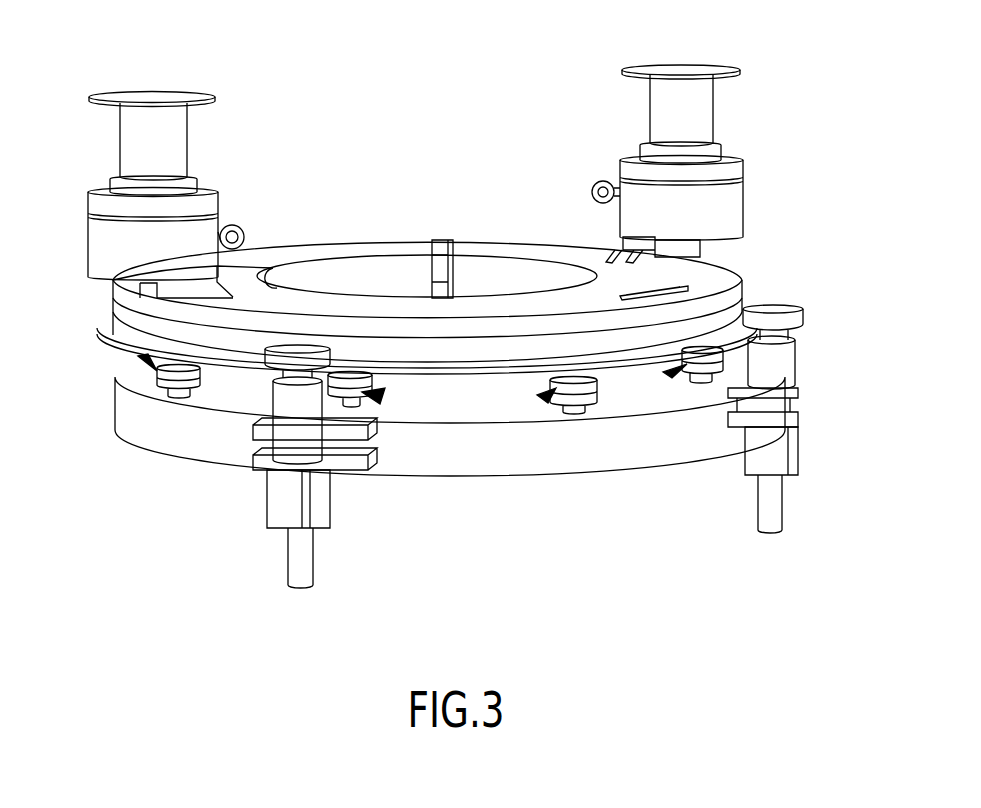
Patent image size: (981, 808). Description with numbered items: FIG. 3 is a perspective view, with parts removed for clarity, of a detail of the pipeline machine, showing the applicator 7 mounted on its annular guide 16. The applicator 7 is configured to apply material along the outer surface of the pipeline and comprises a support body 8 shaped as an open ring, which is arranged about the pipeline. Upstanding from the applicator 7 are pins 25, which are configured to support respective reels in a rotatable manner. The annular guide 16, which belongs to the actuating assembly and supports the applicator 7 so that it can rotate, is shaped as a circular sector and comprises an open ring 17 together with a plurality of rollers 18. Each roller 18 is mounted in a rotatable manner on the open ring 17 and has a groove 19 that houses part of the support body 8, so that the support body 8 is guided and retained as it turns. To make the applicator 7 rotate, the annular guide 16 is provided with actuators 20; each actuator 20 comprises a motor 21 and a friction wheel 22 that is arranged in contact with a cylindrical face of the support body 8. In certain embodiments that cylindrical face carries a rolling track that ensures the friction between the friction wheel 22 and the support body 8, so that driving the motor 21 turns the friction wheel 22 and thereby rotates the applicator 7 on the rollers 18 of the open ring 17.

The applicator 7 is at (426, 77).
The support body 8 is at (510, 305).
The annular guide 16 is at (164, 617).
The open ring 17 is at (472, 445).
The rollers 18 is at (165, 380).
The groove 19 is at (148, 360).
The actuators 20 is at (228, 505).
The motor 21 is at (315, 515).
The friction wheel 22 is at (300, 357).
The pins 25 is at (168, 138).